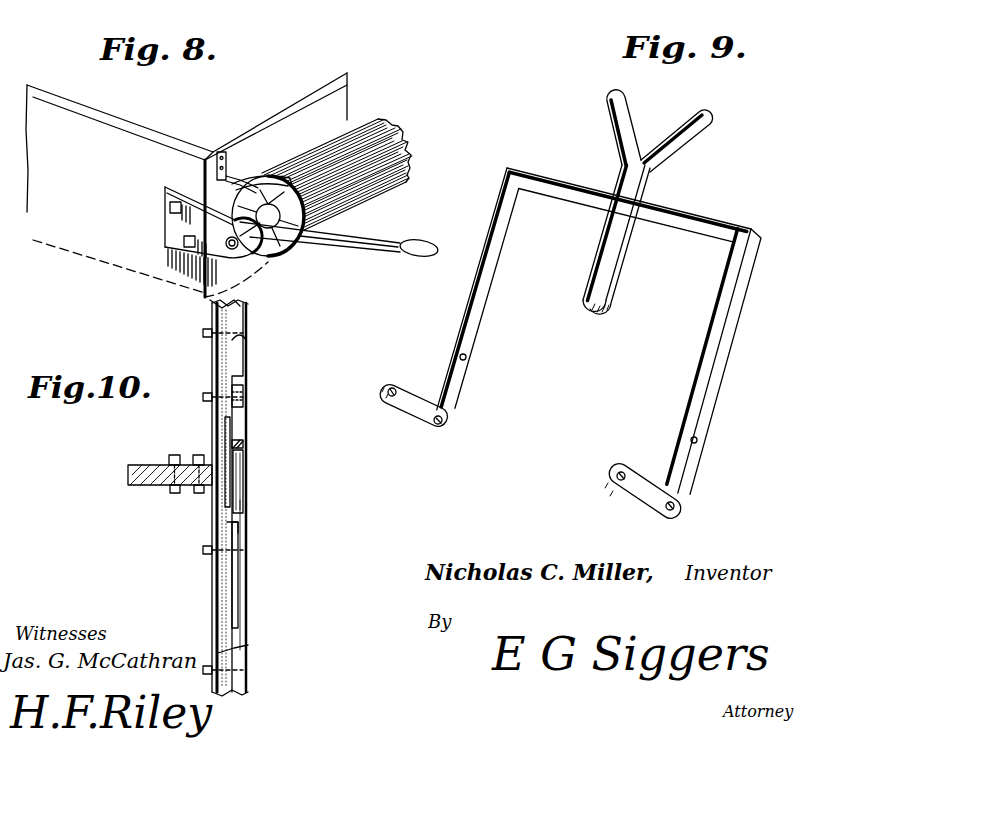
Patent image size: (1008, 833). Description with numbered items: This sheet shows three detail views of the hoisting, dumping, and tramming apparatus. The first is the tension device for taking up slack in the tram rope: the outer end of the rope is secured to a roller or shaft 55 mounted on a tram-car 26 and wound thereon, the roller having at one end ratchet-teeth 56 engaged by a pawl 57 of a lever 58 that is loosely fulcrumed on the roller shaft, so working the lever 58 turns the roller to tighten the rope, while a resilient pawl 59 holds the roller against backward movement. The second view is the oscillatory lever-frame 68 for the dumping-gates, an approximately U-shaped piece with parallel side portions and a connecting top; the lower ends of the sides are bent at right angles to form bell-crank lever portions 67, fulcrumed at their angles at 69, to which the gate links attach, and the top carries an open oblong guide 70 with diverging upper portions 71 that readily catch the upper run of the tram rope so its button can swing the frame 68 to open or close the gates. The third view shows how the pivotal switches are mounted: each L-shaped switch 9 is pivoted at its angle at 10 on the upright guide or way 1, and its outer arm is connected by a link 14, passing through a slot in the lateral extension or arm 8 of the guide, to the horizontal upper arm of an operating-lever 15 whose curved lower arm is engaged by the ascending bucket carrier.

In FIG. 8, the tram-car 26 is at (186, 190).
In FIG. 8, the roller or shaft 55 is at (408, 165).
In FIG. 8, the ratchet-teeth 56 is at (268, 260).
In FIG. 8, the pawl 57 is at (272, 177).
In FIG. 8, the lever 58 is at (343, 250).
In FIG. 8, the resilient pawl 59 is at (237, 176).
In FIG. 9, the bell-crank lever portions 67 is at (412, 388).
In FIG. 9, the oscillatory lever-frame 68 is at (599, 331).
In FIG. 9, the fulcrum 69 is at (442, 423).
In FIG. 9, the open oblong guide 70 is at (588, 290).
In FIG. 9, the diverging upper portions 71 is at (622, 150).
In FIG. 10, the guide or way 1 is at (243, 312).
In FIG. 10, the lateral extension or arm 8 is at (246, 493).
In FIG. 10, the switch 9 is at (243, 438).
In FIG. 10, the pivot 10 is at (205, 398).
In FIG. 10, the link 14 is at (243, 458).
In FIG. 10, the operating-lever 15 is at (237, 588).